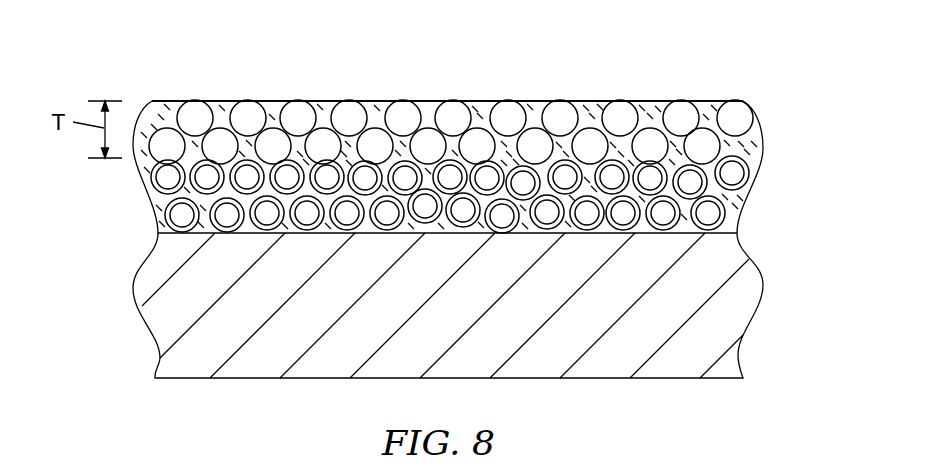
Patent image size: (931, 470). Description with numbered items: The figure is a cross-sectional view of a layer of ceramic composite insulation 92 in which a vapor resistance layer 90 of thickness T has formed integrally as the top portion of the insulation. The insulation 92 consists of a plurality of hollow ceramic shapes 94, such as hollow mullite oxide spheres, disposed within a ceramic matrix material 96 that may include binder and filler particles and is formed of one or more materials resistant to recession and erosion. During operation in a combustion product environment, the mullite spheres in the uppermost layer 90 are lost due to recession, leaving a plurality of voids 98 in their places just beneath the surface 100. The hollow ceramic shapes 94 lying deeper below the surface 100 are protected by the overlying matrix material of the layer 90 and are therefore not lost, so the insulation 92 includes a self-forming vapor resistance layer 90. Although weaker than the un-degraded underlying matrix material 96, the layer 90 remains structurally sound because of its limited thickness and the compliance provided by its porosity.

The vapor resistance layer 90 is at (142, 104).
The layer of ceramic composite insulation 92 is at (733, 196).
The hollow ceramic shapes 94 is at (247, 210).
The ceramic matrix material 96 is at (747, 141).
The voids 98 is at (403, 118).
The surface 100 is at (638, 100).